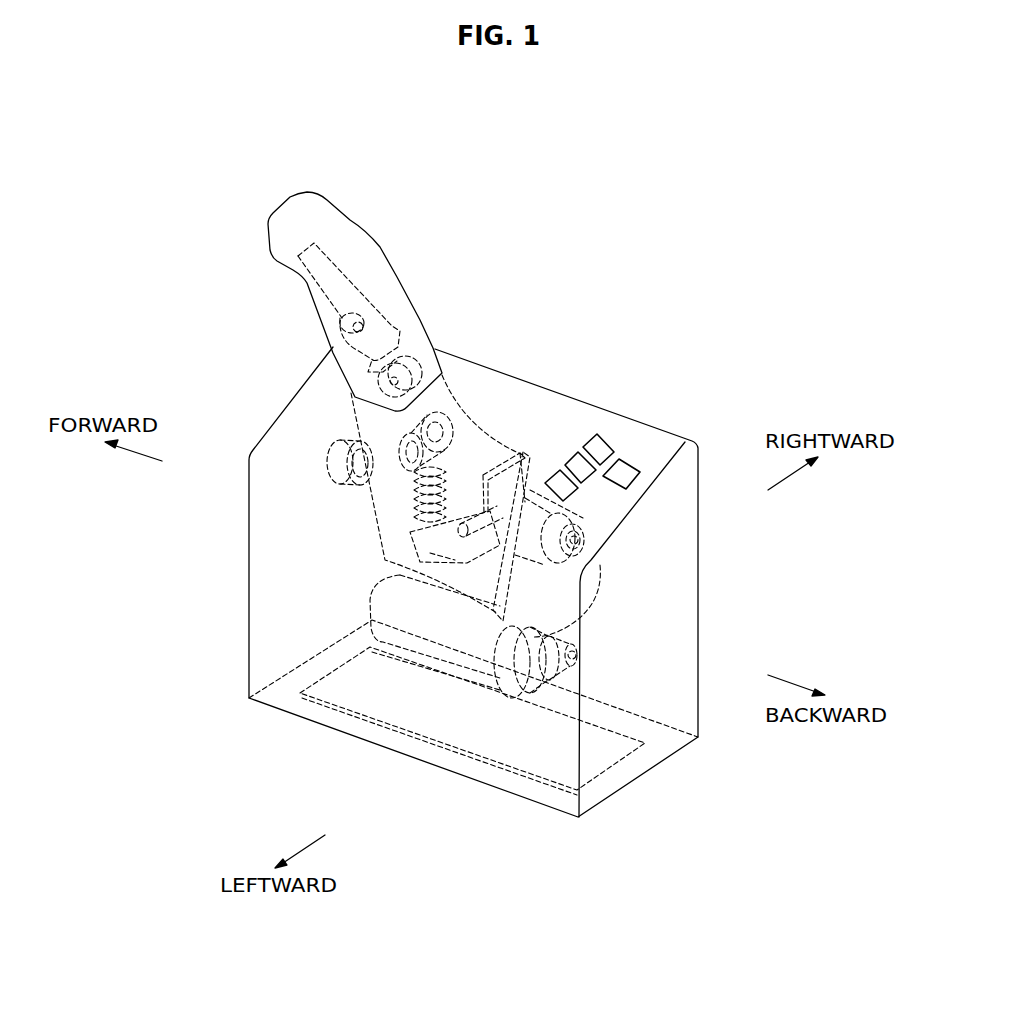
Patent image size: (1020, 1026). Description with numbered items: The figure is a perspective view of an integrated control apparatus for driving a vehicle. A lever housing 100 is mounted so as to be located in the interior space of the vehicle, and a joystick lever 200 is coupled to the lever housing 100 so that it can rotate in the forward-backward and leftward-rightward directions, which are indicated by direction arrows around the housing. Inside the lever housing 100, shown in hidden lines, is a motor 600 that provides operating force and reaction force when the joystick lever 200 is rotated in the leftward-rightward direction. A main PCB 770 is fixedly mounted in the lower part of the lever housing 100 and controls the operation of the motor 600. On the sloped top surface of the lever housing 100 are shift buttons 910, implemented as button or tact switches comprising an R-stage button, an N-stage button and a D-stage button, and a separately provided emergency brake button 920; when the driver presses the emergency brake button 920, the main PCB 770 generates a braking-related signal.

The lever housing 100 is at (277, 607).
The joystick lever 200 is at (322, 210).
The motor 600 is at (427, 640).
The main PCB 770 is at (513, 750).
The shift buttons 910 is at (595, 428).
The emergency brake button 920 is at (632, 471).